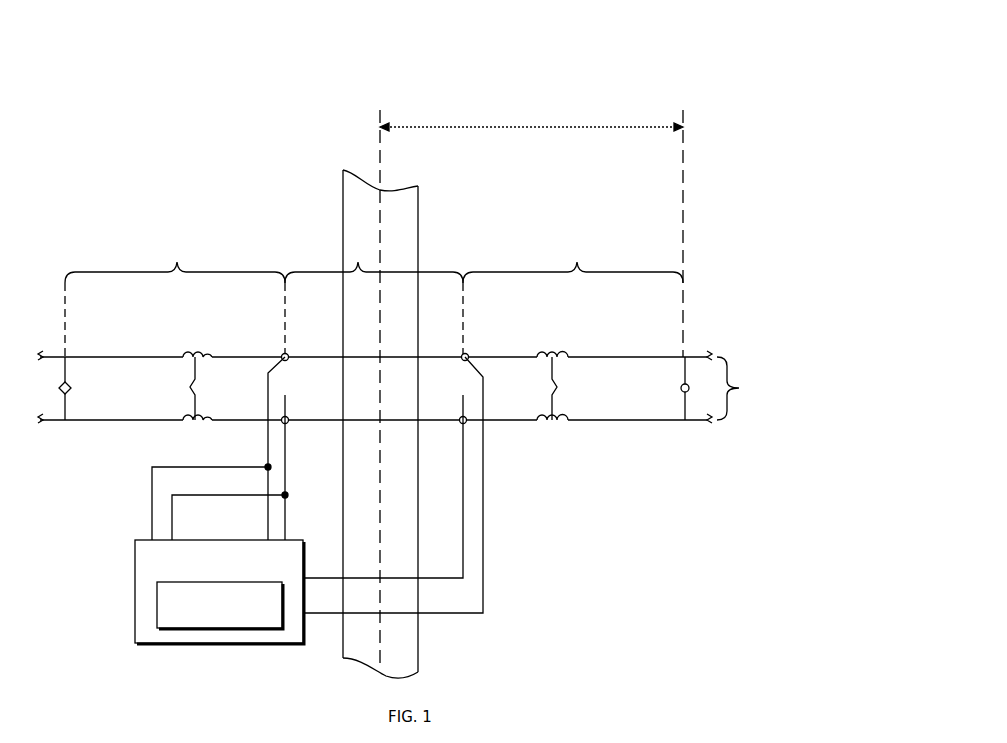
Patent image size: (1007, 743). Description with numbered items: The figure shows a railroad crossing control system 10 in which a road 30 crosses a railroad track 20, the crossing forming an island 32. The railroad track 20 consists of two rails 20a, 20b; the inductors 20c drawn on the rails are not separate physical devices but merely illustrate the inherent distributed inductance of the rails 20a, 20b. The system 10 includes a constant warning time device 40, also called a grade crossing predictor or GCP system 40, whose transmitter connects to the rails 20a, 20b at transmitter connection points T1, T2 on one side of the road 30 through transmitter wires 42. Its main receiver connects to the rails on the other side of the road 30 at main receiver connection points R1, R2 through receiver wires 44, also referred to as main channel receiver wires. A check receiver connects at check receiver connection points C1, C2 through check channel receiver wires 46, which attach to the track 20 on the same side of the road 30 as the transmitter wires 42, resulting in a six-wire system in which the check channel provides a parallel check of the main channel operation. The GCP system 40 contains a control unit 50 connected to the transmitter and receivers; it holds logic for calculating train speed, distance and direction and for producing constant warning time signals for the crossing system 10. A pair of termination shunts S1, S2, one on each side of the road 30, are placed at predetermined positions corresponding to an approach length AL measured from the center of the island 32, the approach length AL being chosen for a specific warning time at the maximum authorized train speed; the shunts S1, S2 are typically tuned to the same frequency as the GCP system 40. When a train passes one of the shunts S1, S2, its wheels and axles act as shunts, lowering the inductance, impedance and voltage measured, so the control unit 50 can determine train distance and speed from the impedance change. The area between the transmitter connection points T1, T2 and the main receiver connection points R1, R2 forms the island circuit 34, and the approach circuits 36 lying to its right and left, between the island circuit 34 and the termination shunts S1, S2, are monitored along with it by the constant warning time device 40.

The railroad crossing control system 10 is at (576, 191).
The railroad track 20 is at (742, 388).
The rail 20a is at (148, 357).
The rail 20b is at (148, 420).
The inductors 20c is at (375, 386).
The road 30 is at (402, 242).
The island 32 is at (411, 402).
The island circuit 34 is at (358, 262).
The approach circuits 36 is at (177, 262).
The constant warning time device 40 is at (135, 597).
The transmitter wires 42 is at (268, 397).
The receiver wires 44 is at (463, 518).
The check channel receiver wires 46 is at (152, 501).
The control unit 50 is at (217, 643).
The approach length AL is at (531, 229).
The termination shunt S1 is at (71, 387).
The termination shunt S2 is at (681, 387).
The transmitter connection point T1 is at (285, 355).
The transmitter connection point T2 is at (285, 395).
The main receiver connection point R1 is at (465, 355).
The main receiver connection point R2 is at (463, 395).
The check receiver connection point C1 is at (266, 465).
The check receiver connection point C2 is at (289, 496).